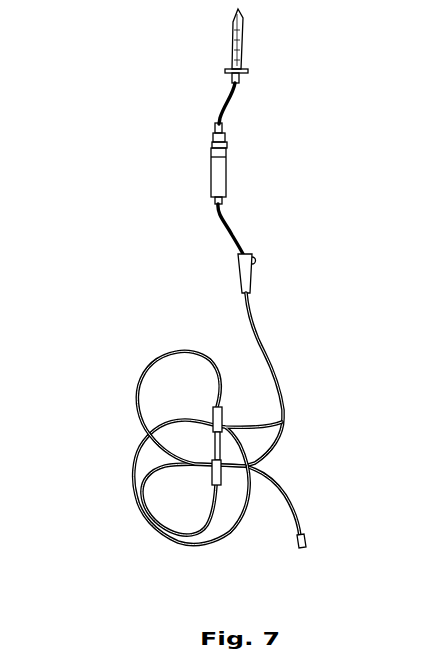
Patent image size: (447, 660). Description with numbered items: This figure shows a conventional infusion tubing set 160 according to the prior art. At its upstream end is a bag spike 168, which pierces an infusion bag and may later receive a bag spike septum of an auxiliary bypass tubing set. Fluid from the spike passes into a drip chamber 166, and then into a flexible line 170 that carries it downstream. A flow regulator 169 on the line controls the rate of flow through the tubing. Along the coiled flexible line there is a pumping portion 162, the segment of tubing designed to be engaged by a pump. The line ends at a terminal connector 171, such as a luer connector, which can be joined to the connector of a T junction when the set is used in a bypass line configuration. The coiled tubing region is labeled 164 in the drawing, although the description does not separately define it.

The infusion tubing set 160 is at (131, 209).
The pumping portion 162 is at (287, 417).
The tubing loop 164 is at (263, 358).
The drip chamber 166 is at (227, 177).
The bag spike 168 is at (242, 61).
The flow regulator 169 is at (251, 272).
The flexible line 170 is at (263, 358).
The terminal connector 171 is at (296, 540).